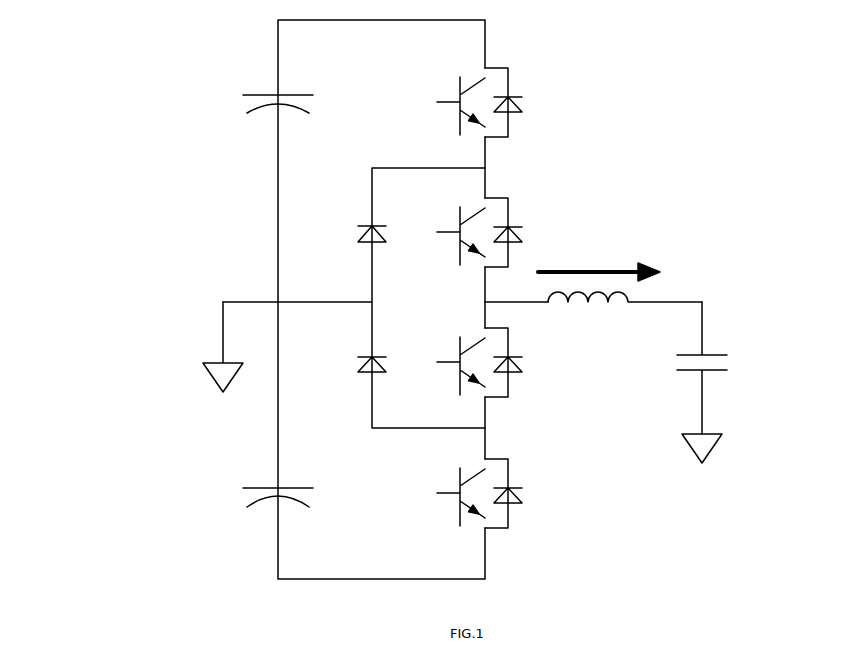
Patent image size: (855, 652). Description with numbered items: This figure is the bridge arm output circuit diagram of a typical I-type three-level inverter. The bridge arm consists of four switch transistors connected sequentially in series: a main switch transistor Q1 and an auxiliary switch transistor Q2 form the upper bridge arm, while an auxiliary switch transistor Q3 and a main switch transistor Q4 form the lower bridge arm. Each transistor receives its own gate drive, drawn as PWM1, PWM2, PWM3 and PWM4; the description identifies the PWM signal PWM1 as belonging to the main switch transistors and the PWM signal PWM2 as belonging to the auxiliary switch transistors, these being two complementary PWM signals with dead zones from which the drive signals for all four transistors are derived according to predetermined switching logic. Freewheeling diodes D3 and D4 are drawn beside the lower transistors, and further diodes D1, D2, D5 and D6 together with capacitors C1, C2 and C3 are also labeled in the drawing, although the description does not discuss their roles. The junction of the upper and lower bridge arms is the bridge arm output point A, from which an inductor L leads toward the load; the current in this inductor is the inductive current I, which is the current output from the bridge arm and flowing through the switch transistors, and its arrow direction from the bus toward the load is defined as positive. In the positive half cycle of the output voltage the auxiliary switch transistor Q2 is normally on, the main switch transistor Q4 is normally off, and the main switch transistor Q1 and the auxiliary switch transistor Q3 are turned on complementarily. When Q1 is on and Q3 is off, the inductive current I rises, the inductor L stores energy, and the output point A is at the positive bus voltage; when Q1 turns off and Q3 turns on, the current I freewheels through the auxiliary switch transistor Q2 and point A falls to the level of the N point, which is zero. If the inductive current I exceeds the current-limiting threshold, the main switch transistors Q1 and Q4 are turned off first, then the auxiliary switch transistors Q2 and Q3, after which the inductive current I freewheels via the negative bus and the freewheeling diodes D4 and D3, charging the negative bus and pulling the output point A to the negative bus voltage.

The first capacitor C1 is at (267, 105).
The second capacitor C2 is at (267, 494).
The output capacitor C3 is at (691, 368).
The main switch transistor Q1 is at (461, 99).
The auxiliary switch transistor Q2 is at (461, 230).
The auxiliary switch transistor Q3 is at (461, 361).
The main switch transistor Q4 is at (461, 491).
The first freewheeling diode D1 is at (513, 102).
The second freewheeling diode D2 is at (513, 232).
The freewheeling diode D3 is at (513, 362).
The freewheeling diode D4 is at (513, 493).
The fifth clamping diode D5 is at (357, 234).
The sixth clamping diode D6 is at (357, 365).
The PWM signal of the main switch transistors PWM1 is at (424, 118).
The PWM signal of the auxiliary switch transistors PWM2 is at (424, 246).
The third PWM drive signal PWM3 is at (424, 381).
The fourth PWM drive signal PWM4 is at (424, 508).
The inductor L is at (625, 319).
The inductive current I is at (599, 265).
The bridge arm output point A is at (490, 295).
The N point N is at (462, 390).